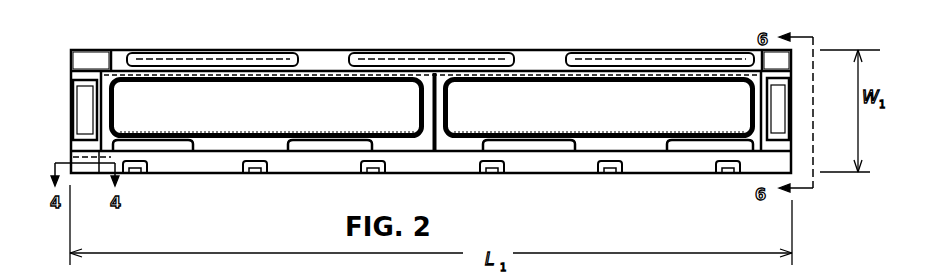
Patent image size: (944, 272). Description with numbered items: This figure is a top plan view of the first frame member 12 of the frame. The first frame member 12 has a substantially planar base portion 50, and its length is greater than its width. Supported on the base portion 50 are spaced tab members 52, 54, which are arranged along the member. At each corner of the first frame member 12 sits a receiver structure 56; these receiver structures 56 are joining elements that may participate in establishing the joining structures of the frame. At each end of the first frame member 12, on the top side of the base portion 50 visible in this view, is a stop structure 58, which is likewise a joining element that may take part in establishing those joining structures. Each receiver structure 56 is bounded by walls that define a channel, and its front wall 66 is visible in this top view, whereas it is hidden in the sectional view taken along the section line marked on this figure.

The first frame member 12 is at (393, 31).
The base portion 50 is at (335, 87).
The tab member 52 is at (192, 147).
The tab member 54 is at (203, 62).
The receiver structure 56 is at (90, 57).
The stop structure 58 is at (83, 105).
The front wall 66 is at (100, 174).